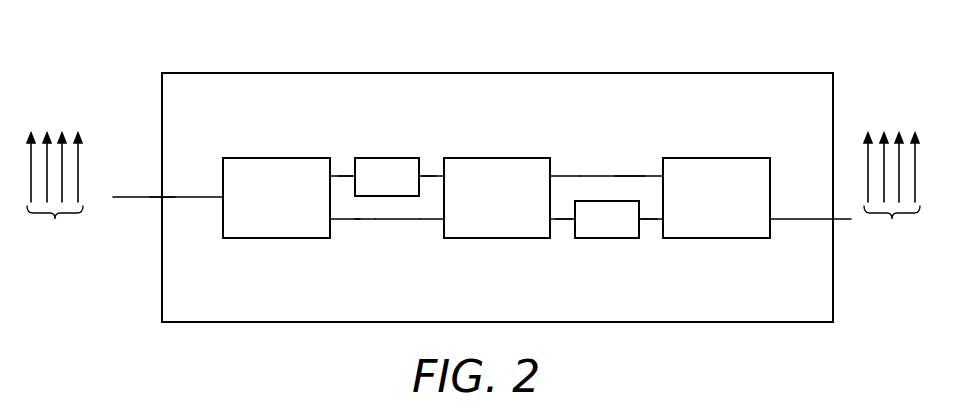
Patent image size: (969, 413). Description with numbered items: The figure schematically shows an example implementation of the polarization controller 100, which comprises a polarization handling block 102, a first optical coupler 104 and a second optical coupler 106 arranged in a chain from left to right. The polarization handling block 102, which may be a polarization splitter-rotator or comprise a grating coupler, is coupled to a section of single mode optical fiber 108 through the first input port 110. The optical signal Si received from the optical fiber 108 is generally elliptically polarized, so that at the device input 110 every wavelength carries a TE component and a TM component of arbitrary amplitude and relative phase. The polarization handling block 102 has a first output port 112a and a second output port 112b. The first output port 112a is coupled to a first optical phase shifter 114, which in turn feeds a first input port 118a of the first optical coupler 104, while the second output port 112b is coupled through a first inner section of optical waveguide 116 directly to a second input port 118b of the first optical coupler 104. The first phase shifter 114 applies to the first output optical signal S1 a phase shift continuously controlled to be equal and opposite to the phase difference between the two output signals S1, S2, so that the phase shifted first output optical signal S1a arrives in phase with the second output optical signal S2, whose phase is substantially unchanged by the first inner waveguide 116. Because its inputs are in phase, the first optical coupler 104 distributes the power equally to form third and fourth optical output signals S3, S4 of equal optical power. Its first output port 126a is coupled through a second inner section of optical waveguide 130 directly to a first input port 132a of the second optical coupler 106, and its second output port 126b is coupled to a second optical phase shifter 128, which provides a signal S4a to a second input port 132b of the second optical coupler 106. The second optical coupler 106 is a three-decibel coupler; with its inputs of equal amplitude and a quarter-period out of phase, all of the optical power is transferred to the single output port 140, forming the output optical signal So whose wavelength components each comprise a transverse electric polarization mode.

The polarization controller 100 is at (190, 73).
The polarization handling block 102 is at (298, 210).
The first optical coupler 104 is at (518, 210).
The second optical coupler 106 is at (738, 210).
The single mode optical fiber 108 is at (126, 197).
The first input port 110 is at (158, 199).
The first output port 112a is at (337, 173).
The second output port 112b is at (335, 221).
The first optical phase shifter 114 is at (406, 187).
The first inner section of optical waveguide 116 is at (410, 221).
The first input port 118a is at (437, 173).
The second input port 118b is at (438, 221).
The first output port 126a is at (556, 173).
The second output port 126b is at (553, 221).
The second optical phase shifter 128 is at (626, 231).
The second inner section of optical waveguide 130 is at (585, 173).
The first input port 132a is at (657, 173).
The second input port 132b is at (661, 221).
The single output port 140 is at (775, 221).
The first output optical signal S1 is at (344, 173).
The phase shifted first output optical signal S1a is at (429, 173).
The second output optical signal S2 is at (363, 221).
The third optical output signal S3 is at (627, 173).
The fourth optical output signal S4 is at (568, 221).
The phase shifted fourth signal S4a is at (650, 221).
The input optical signal Si is at (55, 193).
The output optical signal So is at (892, 194).